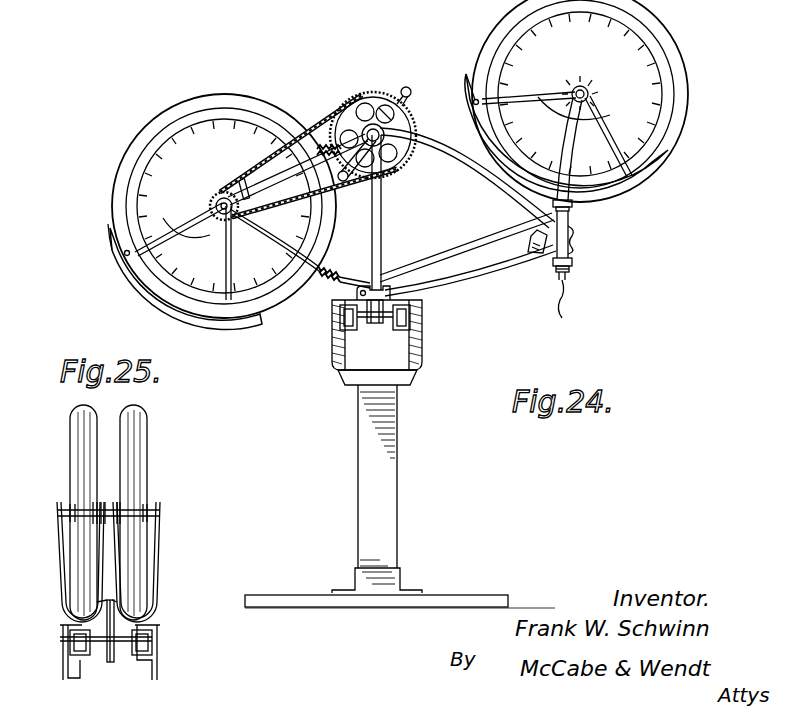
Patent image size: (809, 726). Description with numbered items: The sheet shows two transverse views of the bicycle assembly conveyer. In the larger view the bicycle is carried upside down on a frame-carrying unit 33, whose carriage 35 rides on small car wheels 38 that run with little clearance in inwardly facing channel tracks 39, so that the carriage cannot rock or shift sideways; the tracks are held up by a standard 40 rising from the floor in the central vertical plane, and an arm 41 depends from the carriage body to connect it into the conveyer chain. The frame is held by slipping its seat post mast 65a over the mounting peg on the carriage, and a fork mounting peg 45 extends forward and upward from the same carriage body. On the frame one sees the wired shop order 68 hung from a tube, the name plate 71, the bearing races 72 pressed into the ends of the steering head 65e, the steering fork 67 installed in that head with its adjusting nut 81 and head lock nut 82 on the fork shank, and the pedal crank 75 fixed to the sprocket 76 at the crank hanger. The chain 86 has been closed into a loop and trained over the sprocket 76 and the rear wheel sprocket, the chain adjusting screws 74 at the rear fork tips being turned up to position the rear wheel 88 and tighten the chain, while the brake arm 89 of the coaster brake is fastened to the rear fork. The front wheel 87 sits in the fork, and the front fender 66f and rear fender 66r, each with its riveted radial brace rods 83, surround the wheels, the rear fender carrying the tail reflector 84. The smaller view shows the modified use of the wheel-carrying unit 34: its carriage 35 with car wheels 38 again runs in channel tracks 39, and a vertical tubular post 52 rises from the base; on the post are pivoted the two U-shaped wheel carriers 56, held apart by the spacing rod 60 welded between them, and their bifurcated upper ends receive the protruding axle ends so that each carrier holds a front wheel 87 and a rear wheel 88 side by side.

In FIG. 24, the frame-carrying unit 33 is at (387, 292).
In FIG. 25, the wheel-carrying unit 34 is at (160, 618).
In FIG. 24, the carriage 35 is at (376, 323).
In FIG. 25, the carriage 35 is at (113, 662).
In FIG. 24, the car wheel 38 is at (410, 316).
In FIG. 25, the car wheel 38 is at (152, 643).
In FIG. 24, the channel track 39 is at (398, 308).
In FIG. 25, the channel track 39 is at (155, 628).
In FIG. 24, the standard 40 is at (397, 466).
In FIG. 24, the arm 41 is at (396, 345).
In FIG. 24, the fork mounting peg 45 is at (364, 282).
In FIG. 25, the tubular post 52 is at (100, 620).
In FIG. 25, the wheel carrier 56 is at (165, 560).
In FIG. 25, the spacing rod 60 is at (107, 500).
In FIG. 24, the seat post mast 65a is at (384, 212).
In FIG. 24, the steering head 65e is at (573, 262).
In FIG. 24, the front fender 66f is at (622, 190).
In FIG. 24, the rear fender 66r is at (246, 320).
In FIG. 24, the steering fork 67 is at (566, 152).
In FIG. 24, the wired shop order 68 is at (530, 247).
In FIG. 24, the name plate 71 is at (578, 234).
In FIG. 24, the bearing race 72 is at (572, 214).
In FIG. 24, the chain adjusting screw 74 is at (297, 217).
In FIG. 24, the pedal crank 75 is at (404, 88).
In FIG. 24, the chain sprocket 76 is at (375, 98).
In FIG. 24, the adjusting nut 81 is at (556, 277).
In FIG. 24, the head lock nut 82 is at (561, 297).
In FIG. 24, the radial brace rod 83 is at (178, 232).
In FIG. 24, the tail reflector 84 is at (120, 272).
In FIG. 24, the chain 86 is at (326, 118).
In FIG. 24, the front wheel 87 is at (686, 68).
In FIG. 25, the front wheel 87 is at (70, 453).
In FIG. 24, the rear wheel 88 is at (199, 104).
In FIG. 25, the rear wheel 88 is at (147, 476).
In FIG. 24, the brake arm 89 is at (226, 192).